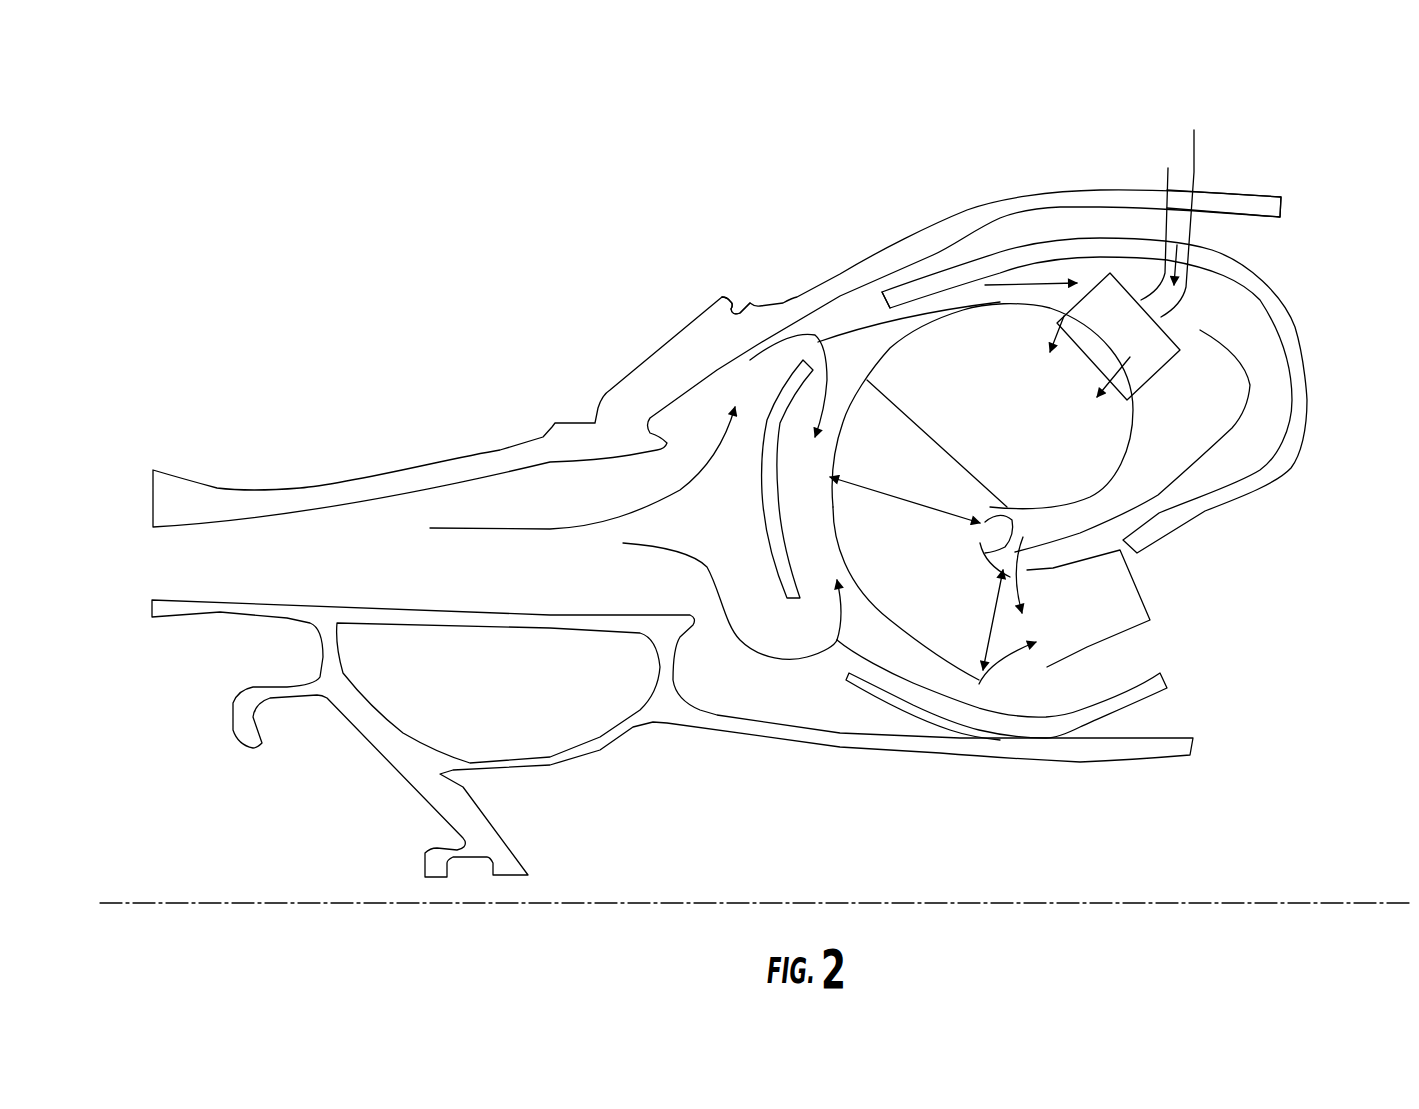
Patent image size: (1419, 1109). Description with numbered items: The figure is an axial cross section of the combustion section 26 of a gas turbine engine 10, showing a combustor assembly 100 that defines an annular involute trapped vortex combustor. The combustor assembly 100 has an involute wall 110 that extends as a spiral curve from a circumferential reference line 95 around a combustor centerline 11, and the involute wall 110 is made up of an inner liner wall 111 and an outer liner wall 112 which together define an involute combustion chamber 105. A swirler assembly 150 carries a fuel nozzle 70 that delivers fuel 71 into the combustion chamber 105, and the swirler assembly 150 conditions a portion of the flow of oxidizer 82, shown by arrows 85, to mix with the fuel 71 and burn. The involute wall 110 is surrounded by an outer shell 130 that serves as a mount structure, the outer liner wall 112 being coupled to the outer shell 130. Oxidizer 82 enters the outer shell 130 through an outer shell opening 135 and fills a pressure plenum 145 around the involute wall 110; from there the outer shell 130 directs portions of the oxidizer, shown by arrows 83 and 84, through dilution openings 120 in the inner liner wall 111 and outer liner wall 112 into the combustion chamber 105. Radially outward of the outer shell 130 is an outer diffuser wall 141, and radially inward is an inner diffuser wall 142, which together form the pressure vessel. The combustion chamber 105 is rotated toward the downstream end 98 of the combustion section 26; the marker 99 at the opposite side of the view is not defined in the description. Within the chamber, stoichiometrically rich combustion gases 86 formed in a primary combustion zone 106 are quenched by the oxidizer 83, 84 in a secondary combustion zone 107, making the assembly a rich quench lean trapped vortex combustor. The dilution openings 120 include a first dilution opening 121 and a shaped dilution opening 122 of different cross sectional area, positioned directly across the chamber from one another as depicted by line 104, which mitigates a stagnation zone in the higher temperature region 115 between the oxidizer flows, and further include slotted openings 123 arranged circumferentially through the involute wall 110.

The engine 10 is at (908, 137).
The combustor centerline 11 is at (165, 895).
The combustion section 26 is at (805, 232).
The fuel nozzle 70 is at (1192, 230).
The fuel 71 is at (1183, 157).
The flow of oxidizer 82 is at (520, 530).
The flow of oxidizer (arrows) 83 is at (1013, 658).
The flow of oxidizer (arrows) 84 is at (1060, 520).
The flow of oxidizer (arrows) 85 is at (1143, 357).
The combustion gases 86 is at (985, 460).
The circumferential reference line 95 is at (1020, 417).
The downstream end 98 is at (1386, 570).
The front direction 99 is at (95, 570).
The combustor assembly 100 is at (937, 305).
The line 104 is at (907, 495).
The involute combustion chamber 105 is at (896, 468).
The primary combustion zone 106 is at (994, 398).
The secondary combustion zone 107 is at (884, 543).
The involute wall 110 is at (1028, 287).
The inner liner wall 111 is at (970, 302).
The outer liner wall 112 is at (1133, 450).
The region 115 is at (1030, 630).
The dilution openings 120 is at (845, 493).
The first dilution opening 121 is at (840, 463).
The shaped dilution opening 122 is at (981, 505).
The slotted openings 123 is at (1060, 560).
The outer shell 130 is at (1304, 350).
The outer shell opening 135 is at (857, 303).
The outer diffuser wall 141 is at (800, 307).
The inner diffuser wall 142 is at (840, 750).
The pressure plenum 145 is at (1157, 426).
The swirler assembly 150 is at (1147, 327).